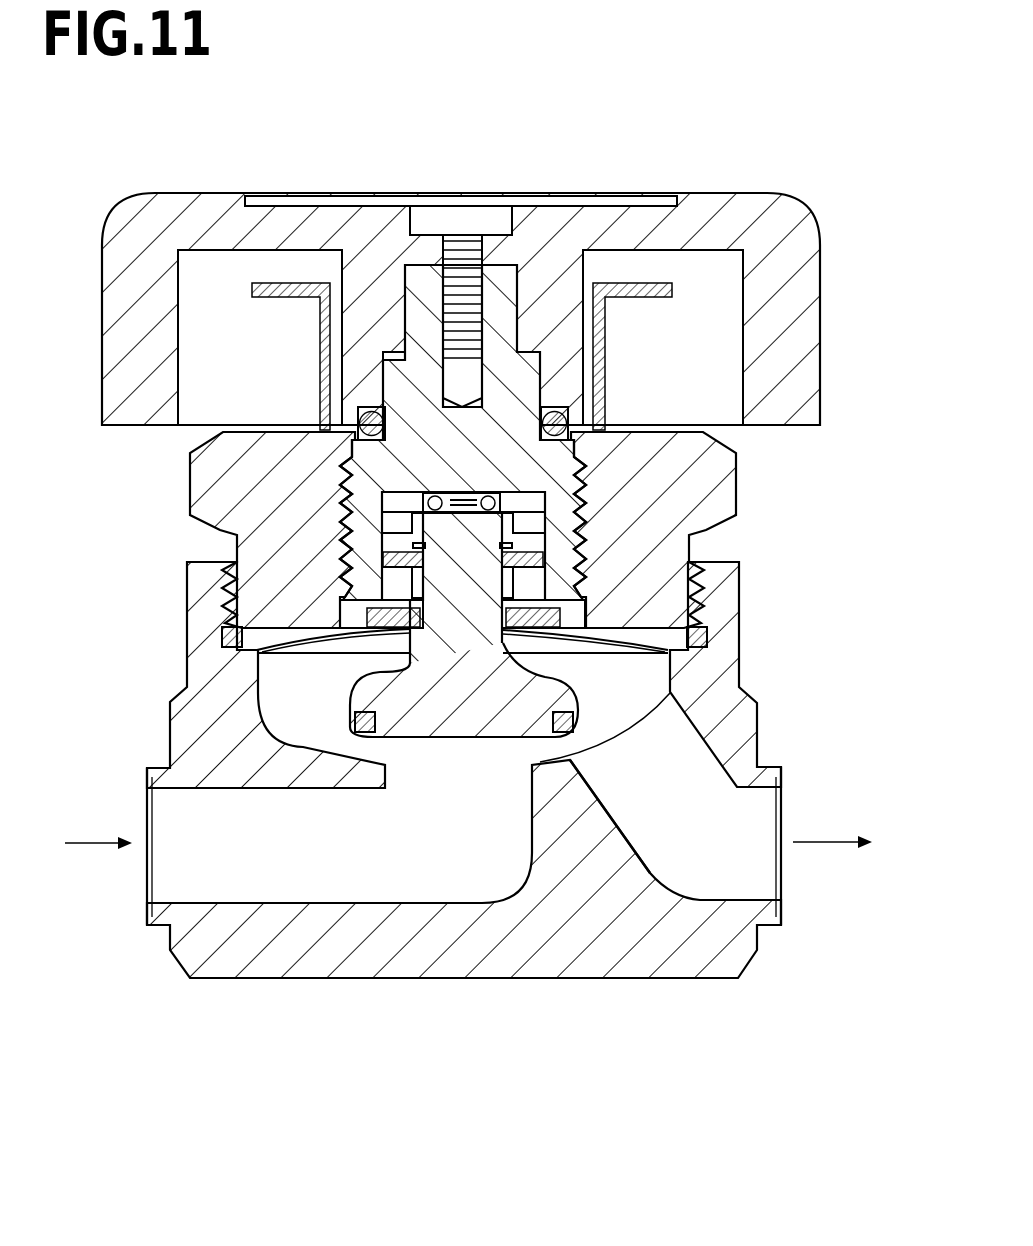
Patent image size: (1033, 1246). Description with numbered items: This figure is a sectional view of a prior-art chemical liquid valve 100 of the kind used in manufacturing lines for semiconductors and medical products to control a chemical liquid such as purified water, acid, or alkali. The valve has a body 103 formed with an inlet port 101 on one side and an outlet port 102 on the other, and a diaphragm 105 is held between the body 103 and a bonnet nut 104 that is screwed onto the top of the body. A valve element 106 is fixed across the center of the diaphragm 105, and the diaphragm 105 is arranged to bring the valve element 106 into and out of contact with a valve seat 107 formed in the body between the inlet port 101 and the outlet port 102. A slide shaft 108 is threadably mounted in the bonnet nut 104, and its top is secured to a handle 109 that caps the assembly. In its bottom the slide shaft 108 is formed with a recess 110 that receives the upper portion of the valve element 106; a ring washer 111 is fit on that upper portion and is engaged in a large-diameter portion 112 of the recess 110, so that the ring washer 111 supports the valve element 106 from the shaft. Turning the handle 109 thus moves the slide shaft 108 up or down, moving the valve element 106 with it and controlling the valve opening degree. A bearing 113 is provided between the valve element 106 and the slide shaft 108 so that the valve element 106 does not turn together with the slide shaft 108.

The chemical liquid valve 100 is at (716, 156).
The inlet port 101 is at (288, 866).
The outlet port 102 is at (715, 855).
The body 103 is at (197, 727).
The bonnet nut 104 is at (213, 472).
The diaphragm 105 is at (317, 650).
The valve element 106 is at (497, 698).
The valve seat 107 is at (553, 777).
The slide shaft 108 is at (493, 467).
The handle 109 is at (788, 298).
The recess 110 is at (580, 522).
The ring washer 111 is at (580, 558).
The large-diameter portion 112 is at (385, 560).
The bearing 113 is at (423, 497).